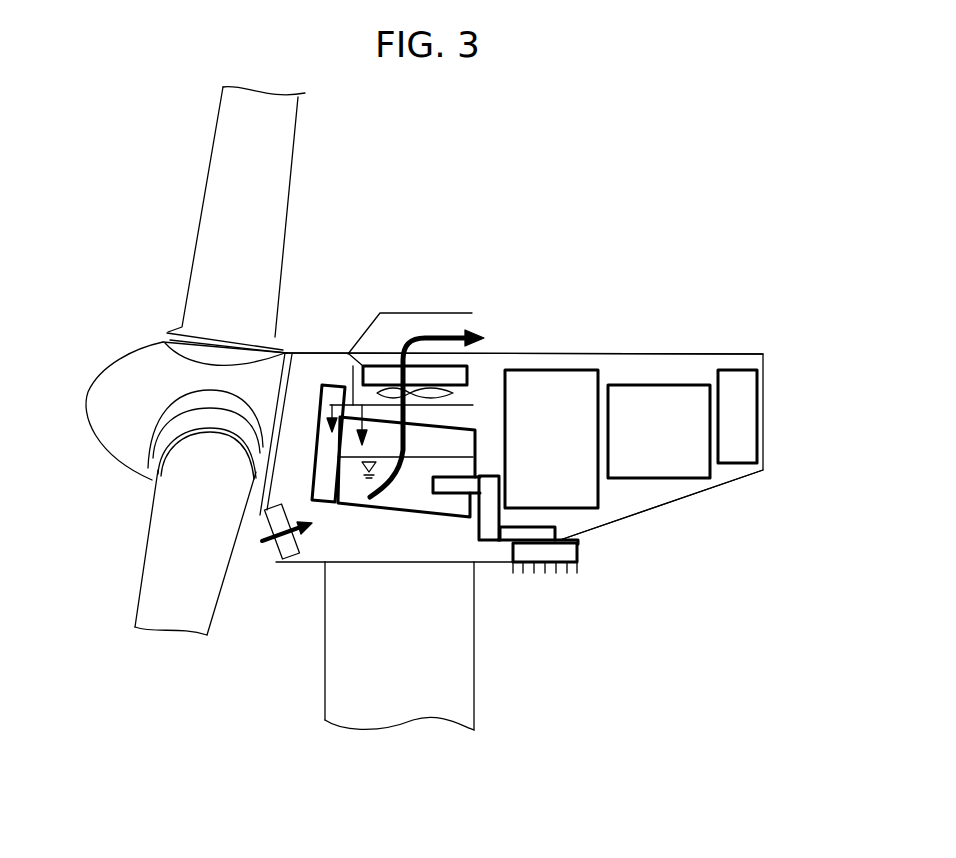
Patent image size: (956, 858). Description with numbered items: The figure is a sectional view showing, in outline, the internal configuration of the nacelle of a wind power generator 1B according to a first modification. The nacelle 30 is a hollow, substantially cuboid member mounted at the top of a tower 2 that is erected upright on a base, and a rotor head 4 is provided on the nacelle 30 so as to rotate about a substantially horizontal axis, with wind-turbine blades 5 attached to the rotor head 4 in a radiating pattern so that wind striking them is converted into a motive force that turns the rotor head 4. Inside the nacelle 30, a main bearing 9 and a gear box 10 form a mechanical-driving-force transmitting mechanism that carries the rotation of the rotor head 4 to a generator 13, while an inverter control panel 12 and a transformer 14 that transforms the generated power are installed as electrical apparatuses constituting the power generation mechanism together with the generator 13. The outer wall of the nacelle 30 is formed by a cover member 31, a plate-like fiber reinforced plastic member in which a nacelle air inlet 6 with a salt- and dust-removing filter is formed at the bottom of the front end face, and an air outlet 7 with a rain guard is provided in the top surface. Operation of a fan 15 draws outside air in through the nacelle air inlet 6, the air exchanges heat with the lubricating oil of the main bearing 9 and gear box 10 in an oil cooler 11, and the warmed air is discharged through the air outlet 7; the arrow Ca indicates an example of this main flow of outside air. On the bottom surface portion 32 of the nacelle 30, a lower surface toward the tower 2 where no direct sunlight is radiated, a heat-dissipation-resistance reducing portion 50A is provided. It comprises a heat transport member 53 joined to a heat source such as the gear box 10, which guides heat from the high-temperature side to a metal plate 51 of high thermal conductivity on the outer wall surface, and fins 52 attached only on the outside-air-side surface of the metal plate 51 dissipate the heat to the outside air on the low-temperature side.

The wind power generator 1B is at (575, 241).
The tower 2 is at (474, 665).
The rotor head 4 is at (90, 375).
The wind-turbine blades 5 is at (297, 138).
The nacelle air inlet 6 is at (277, 557).
The air outlet 7 is at (472, 313).
The main bearing 9 is at (335, 385).
The gear box 10 is at (347, 507).
The oil cooler 11 is at (467, 372).
The inverter control panel 12 is at (757, 413).
The generator 13 is at (570, 368).
The transformer 14 is at (673, 385).
The fan 15 is at (453, 397).
The nacelle 30 is at (737, 352).
The cover member 31 is at (643, 353).
The bottom surface portion 32 is at (682, 497).
The heat-dissipation-resistance reducing portion 50A is at (580, 560).
The metal plate 51 is at (578, 545).
The fins 52 is at (560, 577).
The heat transport member 53 is at (478, 530).
The arrow showing main flow of outside air Ca is at (380, 508).